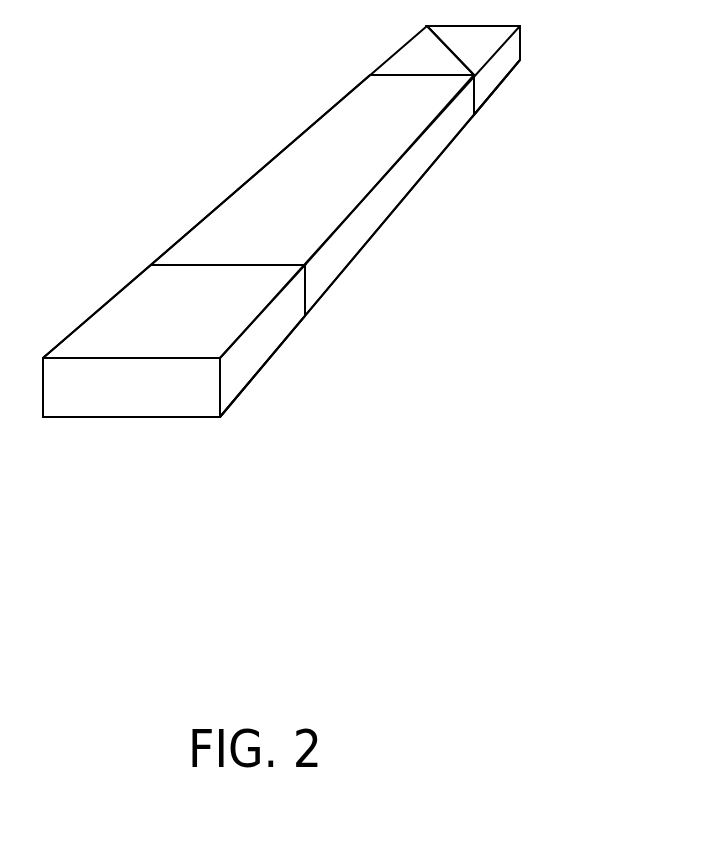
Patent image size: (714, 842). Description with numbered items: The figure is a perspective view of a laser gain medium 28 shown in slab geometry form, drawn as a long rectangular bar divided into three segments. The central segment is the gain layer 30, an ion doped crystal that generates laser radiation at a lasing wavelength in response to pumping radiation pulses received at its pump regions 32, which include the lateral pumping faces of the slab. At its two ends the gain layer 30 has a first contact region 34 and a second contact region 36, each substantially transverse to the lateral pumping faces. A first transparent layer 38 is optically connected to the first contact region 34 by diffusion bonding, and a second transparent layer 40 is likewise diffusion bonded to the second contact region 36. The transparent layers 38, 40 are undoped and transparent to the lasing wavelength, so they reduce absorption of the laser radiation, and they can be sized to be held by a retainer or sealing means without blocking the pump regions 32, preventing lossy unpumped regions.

The laser gain medium 28 is at (187, 562).
The gain layer 30 is at (392, 195).
The pump regions 32 is at (288, 185).
The first contact region 34 is at (475, 95).
The second contact region 36 is at (305, 290).
The first transparent layer 38 is at (502, 65).
The second transparent layer 40 is at (245, 363).